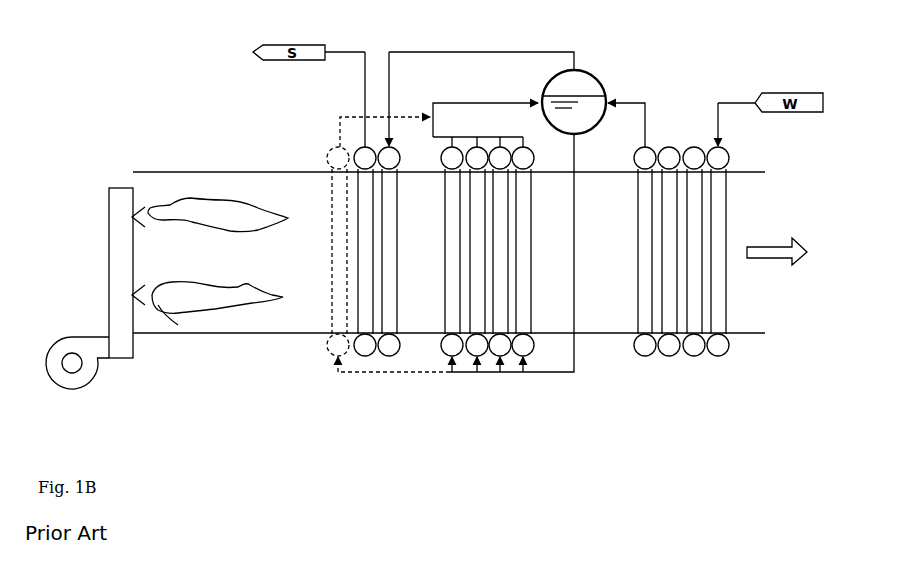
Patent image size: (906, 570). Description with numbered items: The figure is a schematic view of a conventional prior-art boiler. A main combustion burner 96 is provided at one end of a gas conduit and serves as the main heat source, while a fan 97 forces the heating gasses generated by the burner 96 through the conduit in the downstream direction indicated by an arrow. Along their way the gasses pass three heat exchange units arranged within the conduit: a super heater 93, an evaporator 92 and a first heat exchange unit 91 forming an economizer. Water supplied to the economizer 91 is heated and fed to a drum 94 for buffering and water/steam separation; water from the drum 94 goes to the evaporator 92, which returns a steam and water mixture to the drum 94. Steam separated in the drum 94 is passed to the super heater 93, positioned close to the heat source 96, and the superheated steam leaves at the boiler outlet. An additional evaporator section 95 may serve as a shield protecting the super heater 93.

The first heat exchange unit 91 is at (678, 253).
The evaporator 92 is at (483, 255).
The super heater 93 is at (372, 255).
The drum 94 is at (583, 90).
The additional evaporator section 95 is at (332, 253).
The main combustion burner 96 is at (151, 218).
The fan 97 is at (92, 346).